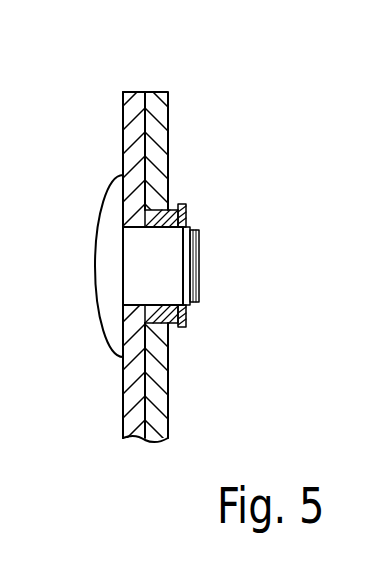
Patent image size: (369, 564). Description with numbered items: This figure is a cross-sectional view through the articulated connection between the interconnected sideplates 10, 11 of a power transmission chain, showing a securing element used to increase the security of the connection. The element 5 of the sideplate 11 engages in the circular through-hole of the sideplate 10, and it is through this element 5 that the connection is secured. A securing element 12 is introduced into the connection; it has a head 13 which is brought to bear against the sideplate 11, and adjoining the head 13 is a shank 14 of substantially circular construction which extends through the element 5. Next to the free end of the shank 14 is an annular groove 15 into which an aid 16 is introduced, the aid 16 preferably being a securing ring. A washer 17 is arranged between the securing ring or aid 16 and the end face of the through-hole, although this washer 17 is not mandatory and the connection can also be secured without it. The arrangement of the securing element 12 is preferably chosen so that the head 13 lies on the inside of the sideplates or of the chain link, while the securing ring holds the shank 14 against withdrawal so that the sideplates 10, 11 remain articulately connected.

The element 5 is at (187, 320).
The sideplate 10 is at (166, 92).
The sideplate 11 is at (129, 92).
The securing element 12 is at (91, 244).
The head 13 is at (105, 328).
The shank 14 is at (162, 272).
The annular groove 15 is at (187, 266).
The aid 16 is at (187, 224).
The washer 17 is at (183, 208).